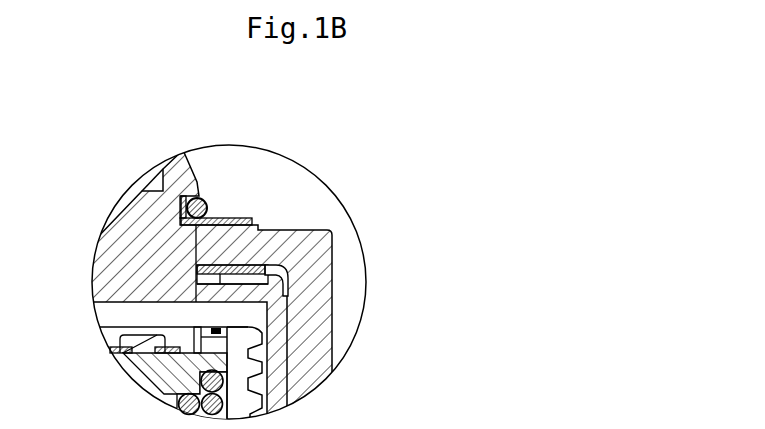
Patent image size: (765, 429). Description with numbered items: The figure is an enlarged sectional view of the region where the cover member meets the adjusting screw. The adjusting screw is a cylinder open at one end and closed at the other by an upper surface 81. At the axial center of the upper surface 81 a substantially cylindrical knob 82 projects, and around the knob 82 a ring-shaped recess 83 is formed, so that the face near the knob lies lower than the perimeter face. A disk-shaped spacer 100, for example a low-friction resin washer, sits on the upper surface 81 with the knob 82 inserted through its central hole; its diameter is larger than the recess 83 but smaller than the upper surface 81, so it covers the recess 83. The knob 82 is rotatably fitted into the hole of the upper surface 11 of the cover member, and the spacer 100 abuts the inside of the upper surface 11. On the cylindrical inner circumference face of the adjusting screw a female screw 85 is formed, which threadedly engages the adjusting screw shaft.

The spacer 100 is at (257, 224).
The upper surface 11 is at (292, 256).
The upper surface 81 is at (284, 268).
The knob 82 is at (186, 199).
The ring-shaped recess 83 is at (221, 264).
The female screw 85 is at (263, 366).